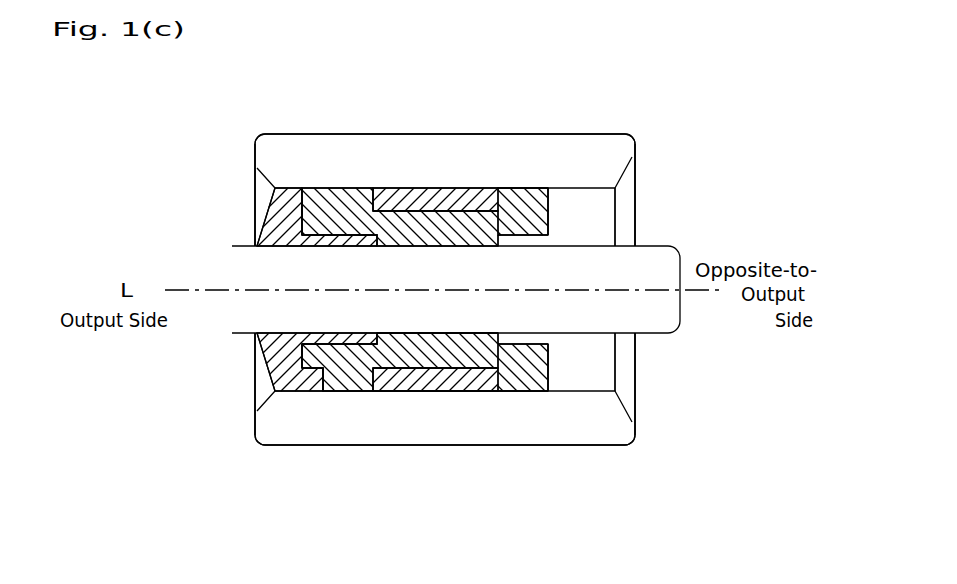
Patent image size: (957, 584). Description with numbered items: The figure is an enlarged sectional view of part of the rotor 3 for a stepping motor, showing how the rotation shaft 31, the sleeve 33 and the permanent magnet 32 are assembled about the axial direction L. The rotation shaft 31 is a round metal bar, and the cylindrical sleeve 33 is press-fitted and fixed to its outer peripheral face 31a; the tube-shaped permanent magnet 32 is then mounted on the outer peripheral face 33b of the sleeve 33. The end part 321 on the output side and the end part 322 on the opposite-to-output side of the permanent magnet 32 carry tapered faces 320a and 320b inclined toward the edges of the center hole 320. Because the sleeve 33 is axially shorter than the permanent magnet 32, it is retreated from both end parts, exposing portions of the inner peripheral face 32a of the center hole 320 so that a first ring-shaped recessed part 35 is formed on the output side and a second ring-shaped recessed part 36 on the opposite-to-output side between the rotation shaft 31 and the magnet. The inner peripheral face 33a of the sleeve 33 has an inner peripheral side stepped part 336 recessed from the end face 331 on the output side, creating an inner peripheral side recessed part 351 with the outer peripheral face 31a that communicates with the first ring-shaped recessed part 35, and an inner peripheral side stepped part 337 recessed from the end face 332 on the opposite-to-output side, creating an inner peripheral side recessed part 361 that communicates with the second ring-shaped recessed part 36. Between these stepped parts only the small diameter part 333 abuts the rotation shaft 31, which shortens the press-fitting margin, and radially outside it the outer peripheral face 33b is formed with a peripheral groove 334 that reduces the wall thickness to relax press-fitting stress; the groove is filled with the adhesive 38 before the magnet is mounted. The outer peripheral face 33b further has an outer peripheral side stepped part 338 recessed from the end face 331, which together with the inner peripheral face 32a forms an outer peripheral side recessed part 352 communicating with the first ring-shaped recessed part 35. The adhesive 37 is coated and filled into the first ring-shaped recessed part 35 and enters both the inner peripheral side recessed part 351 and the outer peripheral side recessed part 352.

The rotor 3 is at (744, 140).
The rotation shaft 31 is at (665, 245).
The outer peripheral face of the rotation shaft 31a is at (423, 340).
The permanent magnet 32 is at (612, 136).
The inner peripheral face of the permanent magnet 32a is at (481, 450).
The center hole 320 is at (518, 180).
The tapered face on the output side 320a is at (268, 180).
The tapered face on the opposite-to-output side 320b is at (627, 172).
The end part on the output side 321 is at (258, 152).
The end part on the opposite-to-output side 322 is at (637, 156).
The sleeve 33 is at (508, 190).
The inner peripheral face of the sleeve 33a is at (437, 421).
The outer peripheral face of the sleeve 33b is at (530, 392).
The end face on the output side 331 is at (318, 225).
The end face on the opposite-to-output side 332 is at (549, 220).
The small diameter part 333 is at (497, 248).
The peripheral groove 334 is at (447, 207).
The inner peripheral side stepped part (output side) 336 is at (353, 343).
The inner peripheral side stepped part (opposite-to-output side) 337 is at (533, 237).
The outer peripheral side stepped part 338 is at (312, 370).
The first ring-shaped recessed part 35 is at (275, 192).
The inner peripheral side recessed part 351 is at (320, 333).
The outer peripheral side recessed part 352 is at (322, 385).
The second ring-shaped recessed part 36 is at (608, 228).
The inner peripheral side recessed part 361 is at (520, 237).
The adhesive 37 is at (288, 213).
The adhesive 38 is at (418, 200).